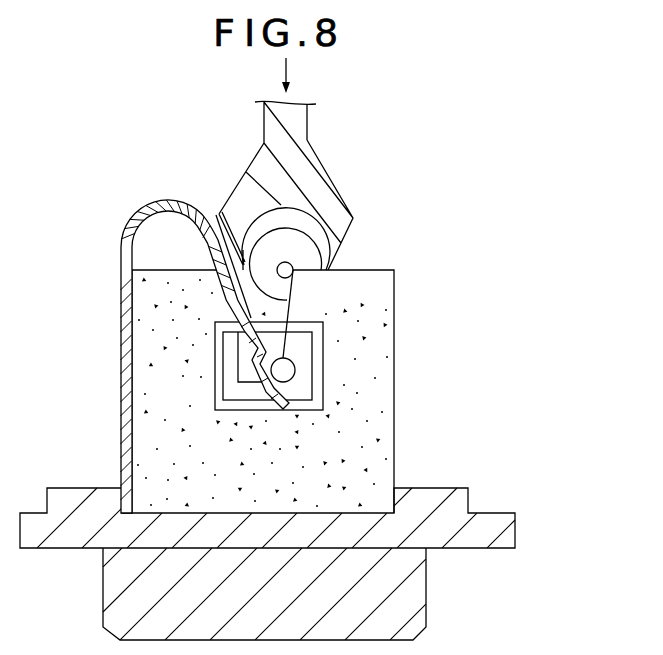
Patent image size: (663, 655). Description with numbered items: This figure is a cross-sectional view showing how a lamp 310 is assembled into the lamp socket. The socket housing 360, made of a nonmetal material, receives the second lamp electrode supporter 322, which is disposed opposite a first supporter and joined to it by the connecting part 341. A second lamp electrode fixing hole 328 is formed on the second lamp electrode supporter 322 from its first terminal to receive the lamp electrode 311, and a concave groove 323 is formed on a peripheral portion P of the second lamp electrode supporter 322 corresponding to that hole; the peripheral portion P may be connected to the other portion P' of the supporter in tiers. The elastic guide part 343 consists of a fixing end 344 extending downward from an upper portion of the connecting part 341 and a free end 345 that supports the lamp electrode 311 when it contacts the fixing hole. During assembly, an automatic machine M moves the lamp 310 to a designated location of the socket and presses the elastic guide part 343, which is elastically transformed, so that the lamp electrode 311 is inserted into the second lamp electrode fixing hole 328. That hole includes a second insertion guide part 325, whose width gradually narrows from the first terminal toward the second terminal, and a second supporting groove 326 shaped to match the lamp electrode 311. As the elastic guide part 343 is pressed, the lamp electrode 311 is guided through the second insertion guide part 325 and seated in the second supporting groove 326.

The elastic guide part 343 is at (220, 127).
The fixing end 344 is at (170, 203).
The free end 345 is at (218, 222).
The connecting part 341 is at (128, 300).
The automatic machine M is at (314, 164).
The lamp 310 is at (300, 242).
The lamp electrode 311 is at (291, 266).
The second insertion guide part 325 is at (291, 297).
The second supporting groove 326 is at (295, 368).
The second lamp electrode fixing hole 328 is at (513, 283).
The second lamp electrode supporter 322 is at (376, 432).
The concave groove 323 is at (232, 380).
The peripheral portion P is at (166, 357).
The other portion P' is at (227, 392).
The socket housing 360 is at (505, 525).